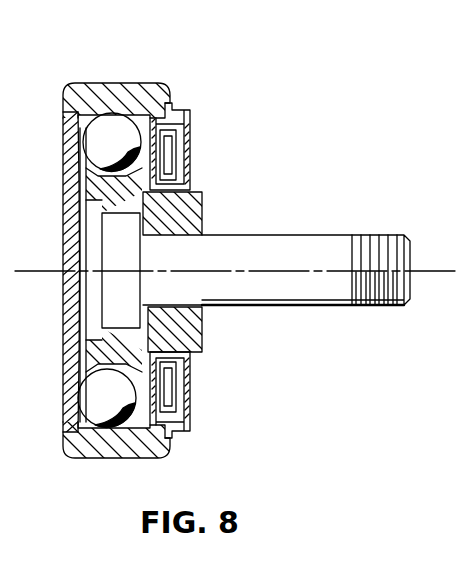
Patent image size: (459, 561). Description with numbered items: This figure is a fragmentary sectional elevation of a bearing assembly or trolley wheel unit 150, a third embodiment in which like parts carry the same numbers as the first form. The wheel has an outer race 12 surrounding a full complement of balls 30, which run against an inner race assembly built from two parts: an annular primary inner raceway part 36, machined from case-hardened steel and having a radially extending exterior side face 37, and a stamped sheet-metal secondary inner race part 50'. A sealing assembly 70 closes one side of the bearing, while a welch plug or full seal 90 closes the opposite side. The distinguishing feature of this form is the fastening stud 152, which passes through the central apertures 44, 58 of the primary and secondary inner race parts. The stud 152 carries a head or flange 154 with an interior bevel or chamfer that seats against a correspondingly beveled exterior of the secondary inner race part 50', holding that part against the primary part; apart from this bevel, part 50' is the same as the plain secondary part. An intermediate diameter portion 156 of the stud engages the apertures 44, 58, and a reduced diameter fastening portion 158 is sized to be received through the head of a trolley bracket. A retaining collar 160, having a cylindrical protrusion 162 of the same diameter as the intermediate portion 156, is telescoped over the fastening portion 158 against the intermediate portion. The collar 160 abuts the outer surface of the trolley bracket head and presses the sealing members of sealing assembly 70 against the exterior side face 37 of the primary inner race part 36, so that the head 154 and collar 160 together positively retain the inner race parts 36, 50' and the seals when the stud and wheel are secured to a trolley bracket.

The outer race 12 is at (99, 83).
The balls 30 is at (123, 118).
The primary inner raceway part 36 is at (137, 168).
The side face 37 is at (122, 176).
The central aperture 44 is at (131, 328).
The secondary inner race part 50' is at (53, 265).
The central aperture 58 is at (100, 328).
The sealing assembly 70 is at (200, 373).
The welch plug 90 is at (63, 212).
The bearing assembly 150 is at (258, 90).
The stud 152 is at (247, 238).
The head 154 is at (88, 330).
The intermediate diameter portion 156 is at (125, 225).
The reduced diameter fastening portion 158 is at (318, 243).
The retaining collar 160 is at (202, 340).
The cylindrical protrusion 162 is at (150, 304).